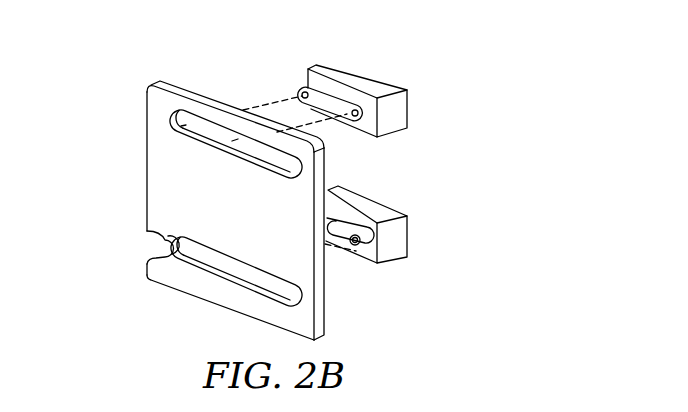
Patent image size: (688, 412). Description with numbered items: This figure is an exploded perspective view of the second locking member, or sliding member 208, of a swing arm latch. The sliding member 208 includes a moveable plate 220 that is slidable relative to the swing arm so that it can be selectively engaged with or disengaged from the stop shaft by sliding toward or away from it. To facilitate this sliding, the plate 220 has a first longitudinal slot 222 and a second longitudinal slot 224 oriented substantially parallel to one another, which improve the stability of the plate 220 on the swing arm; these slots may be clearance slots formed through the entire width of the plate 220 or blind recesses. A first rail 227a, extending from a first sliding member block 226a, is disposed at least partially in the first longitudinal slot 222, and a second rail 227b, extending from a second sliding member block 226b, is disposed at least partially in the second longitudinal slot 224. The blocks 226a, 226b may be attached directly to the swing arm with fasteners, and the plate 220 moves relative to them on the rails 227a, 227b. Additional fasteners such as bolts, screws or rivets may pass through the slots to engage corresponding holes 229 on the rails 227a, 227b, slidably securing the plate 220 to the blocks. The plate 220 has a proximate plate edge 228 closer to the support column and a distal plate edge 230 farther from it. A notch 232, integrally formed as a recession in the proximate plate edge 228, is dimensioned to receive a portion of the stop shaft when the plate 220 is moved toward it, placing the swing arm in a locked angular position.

The sliding member 208 is at (525, 76).
The moveable plate 220 is at (193, 97).
The first longitudinal slot 222 is at (297, 169).
The second longitudinal slot 224 is at (296, 292).
The first sliding member block 226a is at (370, 80).
The second sliding member block 226b is at (398, 229).
The first rail 227a is at (351, 107).
The second rail 227b is at (338, 218).
The proximate plate edge 228 is at (147, 121).
The holes 229 is at (302, 93).
The distal plate edge 230 is at (318, 290).
The notch 232 is at (121, 249).